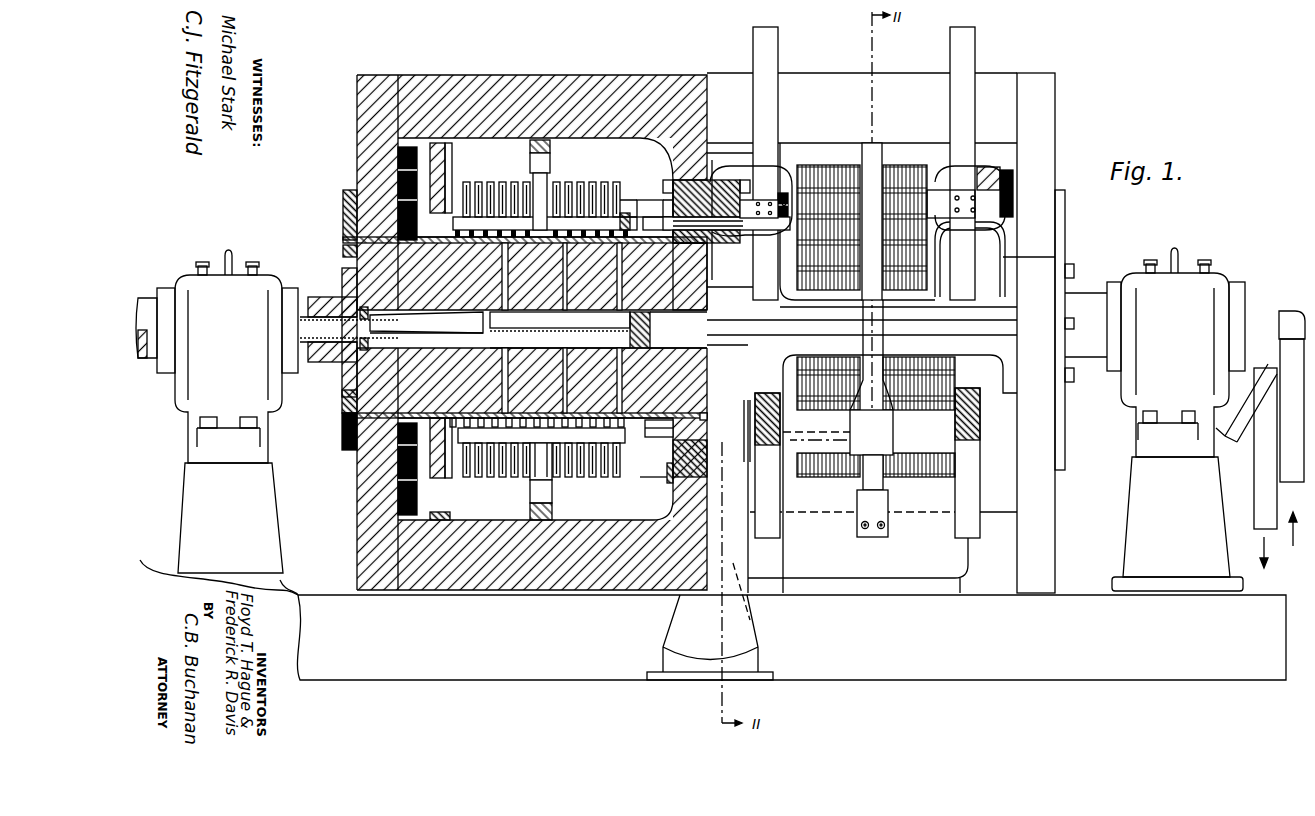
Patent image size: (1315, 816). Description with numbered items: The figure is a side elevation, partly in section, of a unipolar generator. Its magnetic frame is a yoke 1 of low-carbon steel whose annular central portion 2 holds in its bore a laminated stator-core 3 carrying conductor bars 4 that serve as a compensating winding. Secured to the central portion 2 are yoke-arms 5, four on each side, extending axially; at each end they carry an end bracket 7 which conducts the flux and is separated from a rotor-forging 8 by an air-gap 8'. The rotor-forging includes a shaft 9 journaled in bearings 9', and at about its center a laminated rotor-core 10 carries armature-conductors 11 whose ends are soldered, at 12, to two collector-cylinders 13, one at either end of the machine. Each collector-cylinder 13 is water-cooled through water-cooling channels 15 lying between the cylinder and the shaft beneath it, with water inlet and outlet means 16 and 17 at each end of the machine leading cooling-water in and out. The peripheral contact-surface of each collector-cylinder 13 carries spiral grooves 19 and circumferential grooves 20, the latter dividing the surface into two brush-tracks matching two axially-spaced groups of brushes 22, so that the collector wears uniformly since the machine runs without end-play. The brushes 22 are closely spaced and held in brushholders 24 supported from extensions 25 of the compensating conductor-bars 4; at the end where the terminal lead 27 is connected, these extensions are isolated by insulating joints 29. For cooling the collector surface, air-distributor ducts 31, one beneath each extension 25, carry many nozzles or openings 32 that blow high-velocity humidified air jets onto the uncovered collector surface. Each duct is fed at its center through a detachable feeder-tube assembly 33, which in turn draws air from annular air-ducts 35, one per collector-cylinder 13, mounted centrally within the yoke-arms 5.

The yoke 1 is at (900, 60).
The central portion of the yoke 2 is at (719, 120).
The laminated stator-core 3 is at (677, 183).
The conductor bars 4 is at (705, 211).
The yoke-arms 5 is at (501, 78).
The end bracket 7 is at (377, 76).
The rotor-forging 8 is at (526, 343).
The air-gap 8' is at (330, 223).
The shaft 9 is at (701, 302).
The bearings 9' is at (690, 415).
The laminated rotor-core 10 is at (712, 430).
The armature-conductors 11 is at (661, 433).
The soldered joints 12 is at (660, 433).
The collector-cylinders 13 is at (447, 448).
The water-cooling channels 15 is at (598, 243).
The water inlet means 16 is at (483, 323).
The water outlet means 17 is at (565, 352).
The spiral grooves 19 is at (466, 239).
The circumferential grooves 20 is at (453, 230).
The brushes 22 is at (577, 190).
The brushholders 24 is at (503, 184).
The compensating-bar extensions 25 is at (473, 190).
The terminal lead 27 is at (756, 120).
The insulating joints 29 is at (786, 186).
The air-distributor ducts 31 is at (578, 243).
The nozzles or openings 32 is at (513, 241).
The feeder-tube assembly 33 is at (548, 228).
The annular air-ducts 35 is at (884, 168).